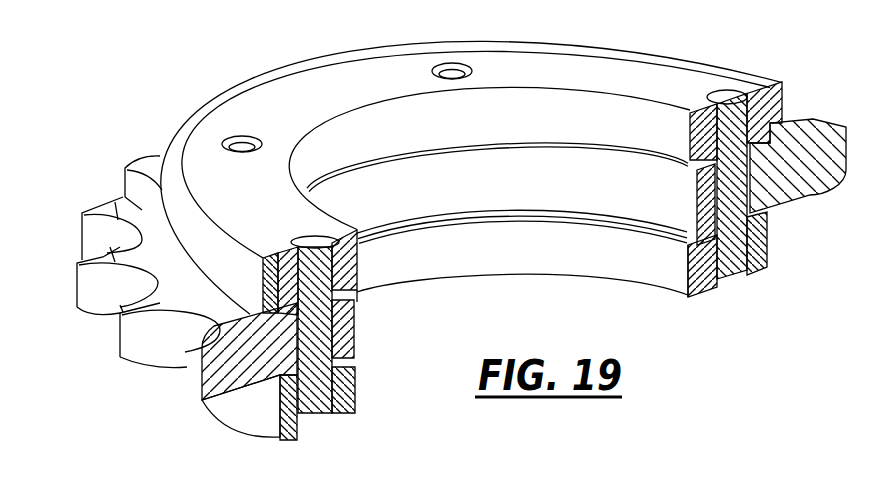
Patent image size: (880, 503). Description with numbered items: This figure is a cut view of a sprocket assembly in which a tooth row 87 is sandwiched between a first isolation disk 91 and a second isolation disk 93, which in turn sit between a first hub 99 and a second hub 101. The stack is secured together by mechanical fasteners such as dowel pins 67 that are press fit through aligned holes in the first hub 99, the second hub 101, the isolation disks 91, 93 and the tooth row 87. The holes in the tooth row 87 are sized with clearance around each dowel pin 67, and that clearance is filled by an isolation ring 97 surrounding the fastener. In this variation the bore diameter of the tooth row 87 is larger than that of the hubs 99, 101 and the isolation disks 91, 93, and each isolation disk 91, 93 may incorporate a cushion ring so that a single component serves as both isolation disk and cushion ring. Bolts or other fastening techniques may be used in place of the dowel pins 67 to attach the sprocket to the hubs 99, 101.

The first isolation disk 91 is at (182, 144).
The first hub 99 is at (292, 113).
The isolation ring 97 is at (281, 337).
The dowel pin 67 is at (313, 407).
The second isolation disk 93 is at (338, 363).
The second hub 101 is at (241, 409).
The tooth row 87 is at (142, 338).